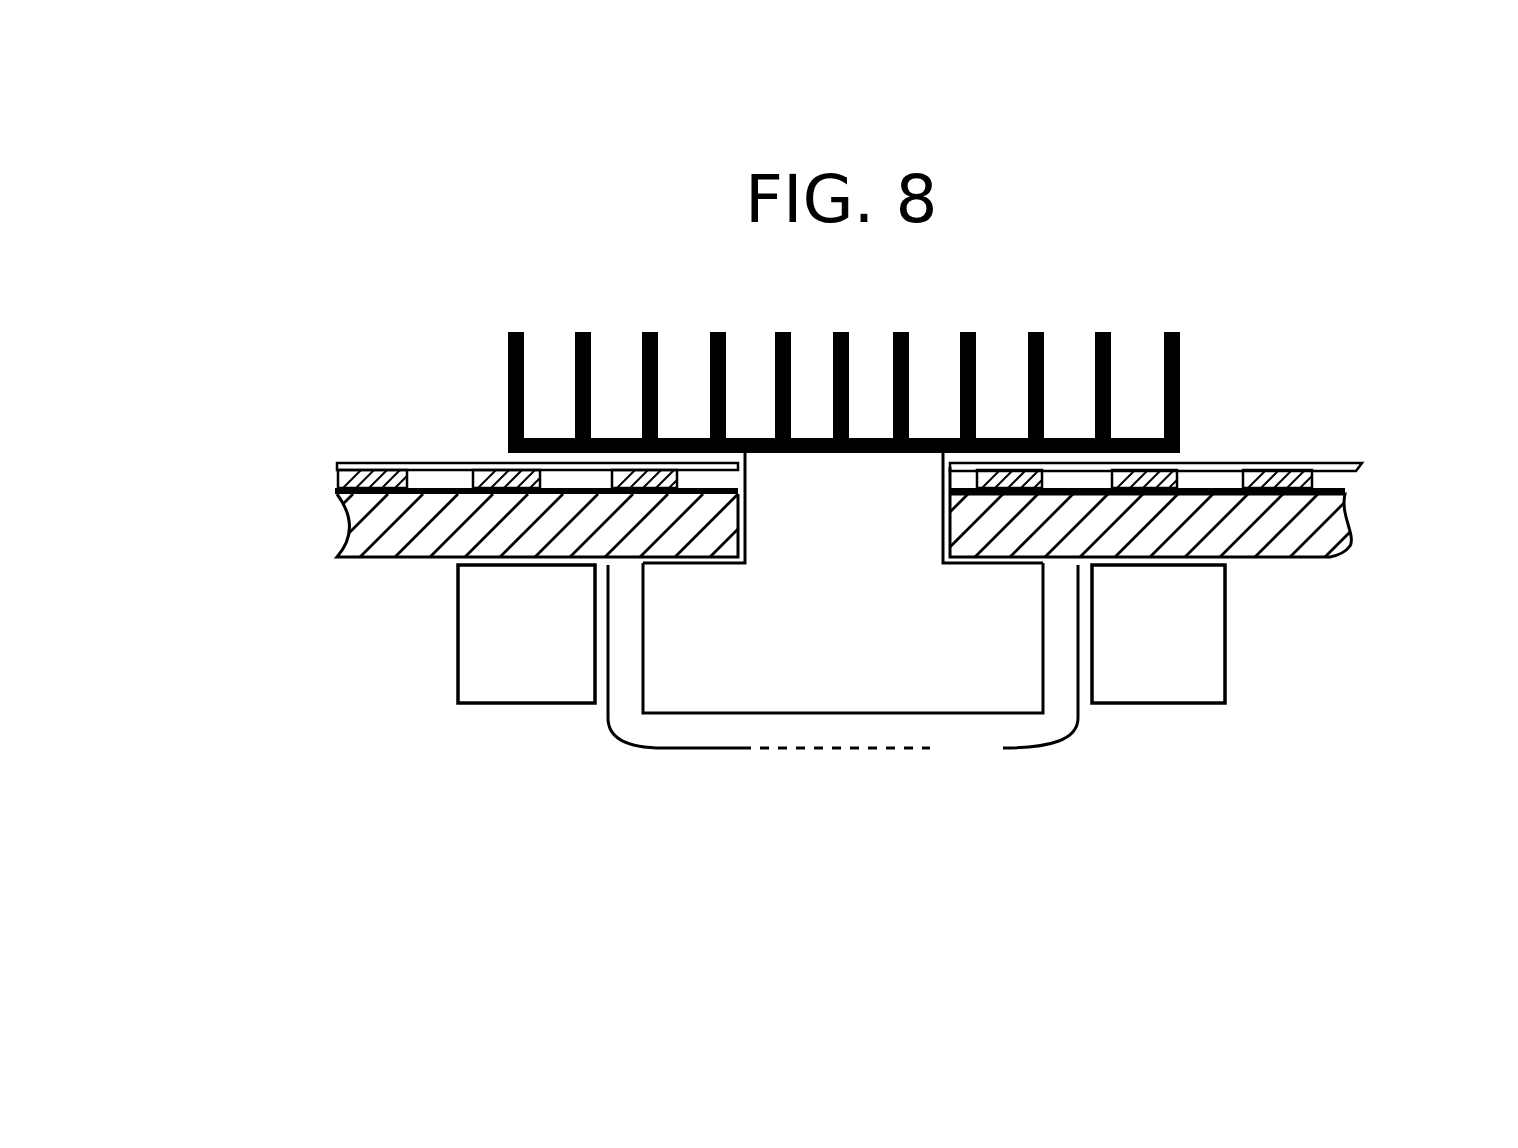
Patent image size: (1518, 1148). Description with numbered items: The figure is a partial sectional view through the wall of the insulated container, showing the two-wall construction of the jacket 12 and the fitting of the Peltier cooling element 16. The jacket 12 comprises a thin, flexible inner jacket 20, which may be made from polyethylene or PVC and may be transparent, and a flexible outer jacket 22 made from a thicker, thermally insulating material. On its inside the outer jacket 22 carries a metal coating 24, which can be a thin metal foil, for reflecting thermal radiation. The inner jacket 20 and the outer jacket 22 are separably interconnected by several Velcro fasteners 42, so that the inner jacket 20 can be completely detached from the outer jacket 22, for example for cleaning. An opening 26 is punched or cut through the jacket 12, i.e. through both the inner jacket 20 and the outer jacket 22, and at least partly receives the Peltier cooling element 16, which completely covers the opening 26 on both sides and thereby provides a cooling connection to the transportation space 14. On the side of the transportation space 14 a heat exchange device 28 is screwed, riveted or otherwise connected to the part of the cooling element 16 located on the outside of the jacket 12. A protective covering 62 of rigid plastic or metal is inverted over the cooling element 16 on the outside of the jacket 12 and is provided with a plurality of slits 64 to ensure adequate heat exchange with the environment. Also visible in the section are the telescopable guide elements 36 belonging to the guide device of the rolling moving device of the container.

The jacket 12 is at (290, 500).
The transportation space 14 is at (634, 283).
The Peltier cooling element 16 is at (783, 663).
The inner jacket 20 is at (1287, 467).
The outer jacket 22 is at (1267, 533).
The metal coating 24 is at (385, 468).
The opening 26 is at (945, 521).
The heat exchange device 28 is at (1182, 363).
The telescopable guide elements 36 is at (532, 637).
The Velcro fasteners 42 is at (483, 468).
The protective covering 62 is at (1038, 745).
The slits 64 is at (893, 752).